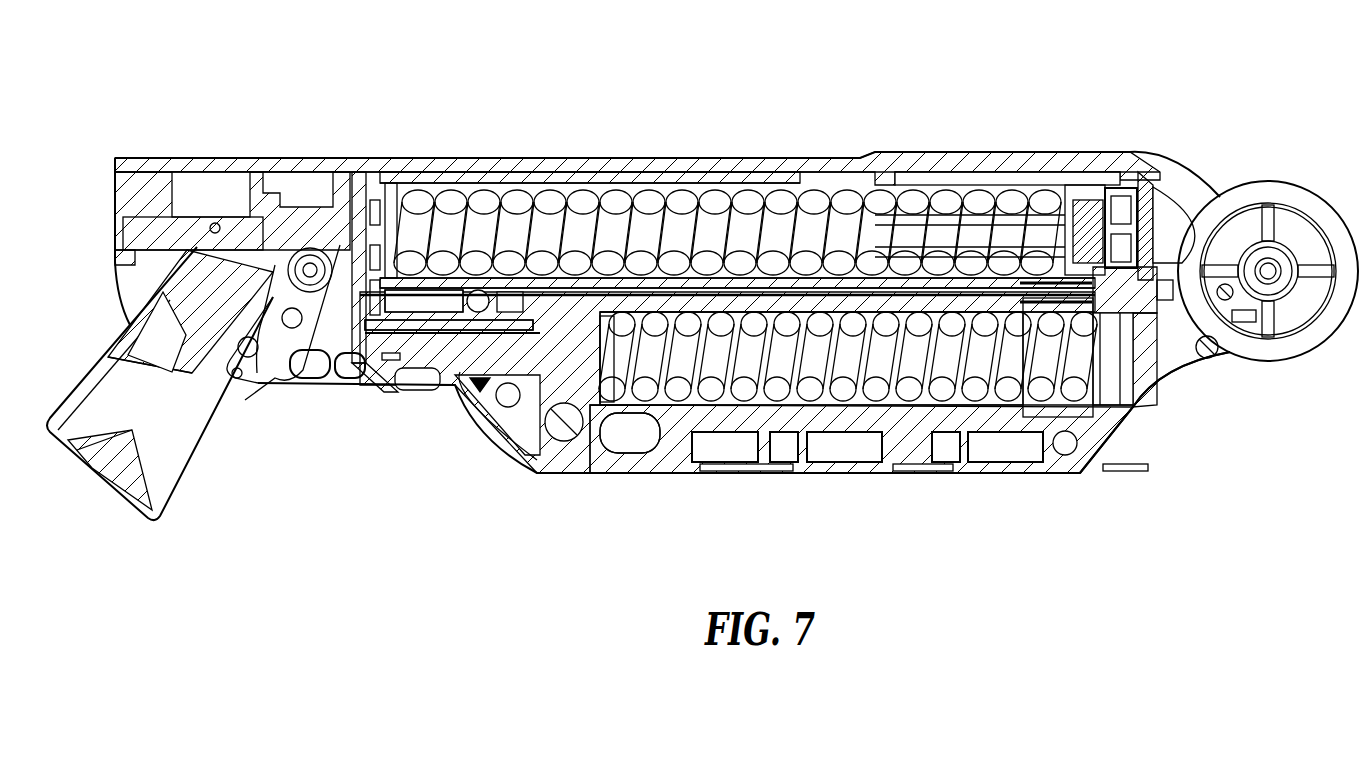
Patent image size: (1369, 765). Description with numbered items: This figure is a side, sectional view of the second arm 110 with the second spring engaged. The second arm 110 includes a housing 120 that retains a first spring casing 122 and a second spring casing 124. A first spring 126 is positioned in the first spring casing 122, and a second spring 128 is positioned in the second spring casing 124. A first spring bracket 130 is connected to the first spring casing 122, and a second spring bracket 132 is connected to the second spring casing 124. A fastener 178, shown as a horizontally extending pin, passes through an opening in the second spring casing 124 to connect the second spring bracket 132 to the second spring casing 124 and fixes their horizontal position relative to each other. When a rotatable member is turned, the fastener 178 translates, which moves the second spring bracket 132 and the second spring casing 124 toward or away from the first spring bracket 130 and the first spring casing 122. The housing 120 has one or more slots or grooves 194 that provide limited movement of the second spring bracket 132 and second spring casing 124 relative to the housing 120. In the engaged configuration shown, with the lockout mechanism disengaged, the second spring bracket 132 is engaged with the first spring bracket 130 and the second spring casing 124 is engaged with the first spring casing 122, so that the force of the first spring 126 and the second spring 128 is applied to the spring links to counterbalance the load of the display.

The second arm 110 is at (1223, 83).
The housing 120 is at (1017, 485).
The first spring casing 122 is at (658, 172).
The second spring casing 124 is at (893, 425).
The first spring 126 is at (975, 195).
The second spring 128 is at (1130, 410).
The first spring bracket 130 is at (350, 172).
The second spring bracket 132 is at (415, 330).
The fastener 178 is at (563, 428).
The slots or grooves 194 is at (625, 445).